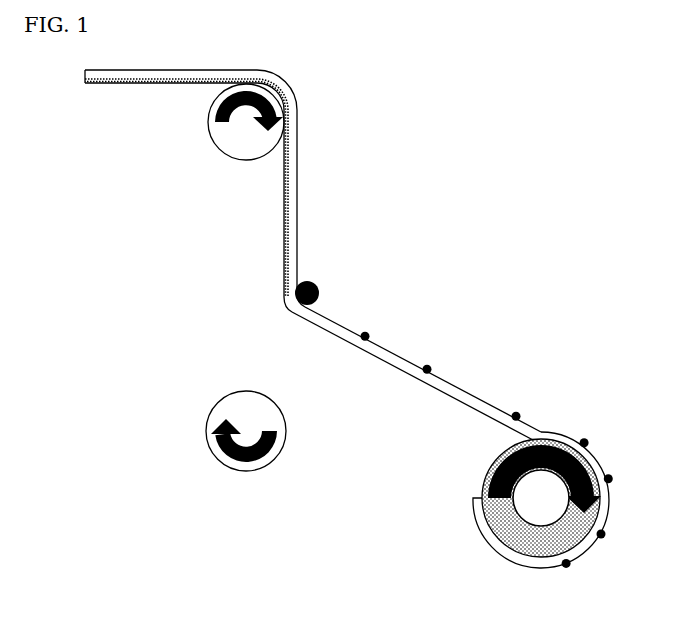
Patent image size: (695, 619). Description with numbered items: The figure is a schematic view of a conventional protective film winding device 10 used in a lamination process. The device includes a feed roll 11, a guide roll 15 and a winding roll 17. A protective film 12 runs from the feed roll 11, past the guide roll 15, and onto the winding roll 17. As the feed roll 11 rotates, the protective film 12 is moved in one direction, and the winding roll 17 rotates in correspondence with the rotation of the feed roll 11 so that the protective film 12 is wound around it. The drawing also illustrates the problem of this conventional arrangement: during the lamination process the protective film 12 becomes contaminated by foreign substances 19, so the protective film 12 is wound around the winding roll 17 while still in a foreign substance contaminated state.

The protective film winding device 10 is at (57, 134).
The feed roll 11 is at (226, 143).
The protective film 12 is at (454, 391).
The guide roll 15 is at (318, 288).
The winding roll 17 is at (483, 470).
The foreign substances 19 is at (433, 362).